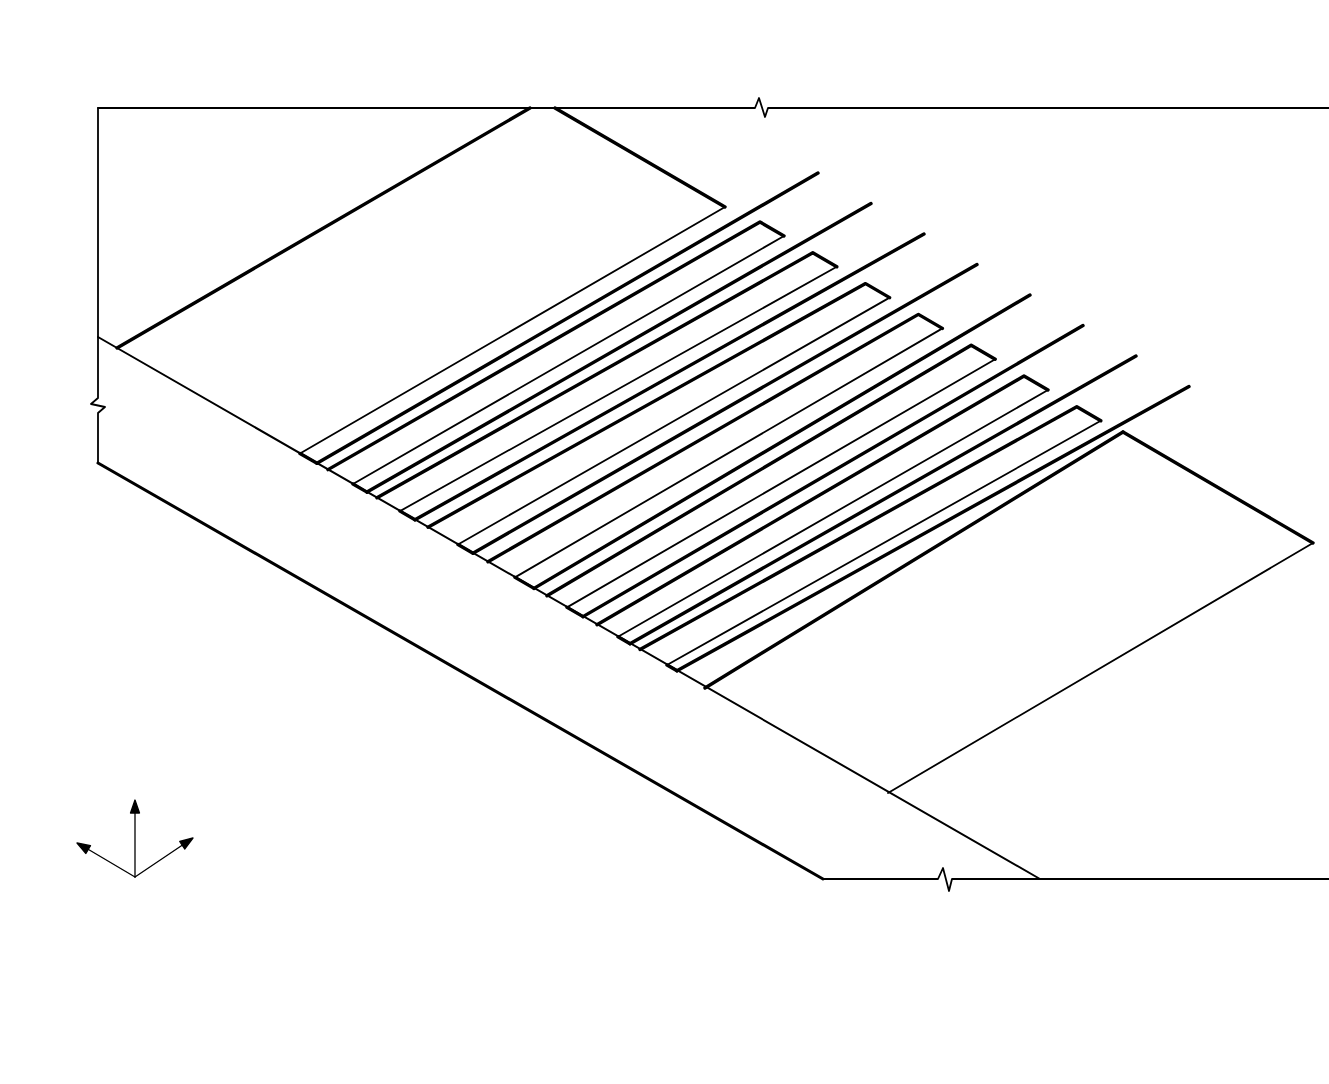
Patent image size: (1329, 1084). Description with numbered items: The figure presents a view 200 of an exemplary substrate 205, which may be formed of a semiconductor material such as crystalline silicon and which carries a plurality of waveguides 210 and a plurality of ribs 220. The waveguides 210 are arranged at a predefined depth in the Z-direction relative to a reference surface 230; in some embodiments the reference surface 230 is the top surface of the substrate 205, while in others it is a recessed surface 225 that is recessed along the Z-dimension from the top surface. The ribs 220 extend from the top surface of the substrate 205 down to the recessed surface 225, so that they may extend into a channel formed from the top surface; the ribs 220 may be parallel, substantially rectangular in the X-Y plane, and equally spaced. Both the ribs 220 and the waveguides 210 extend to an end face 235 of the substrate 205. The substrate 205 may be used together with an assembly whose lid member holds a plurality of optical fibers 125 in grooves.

The view 200 is at (205, 86).
The substrate 205 is at (670, 827).
The end face 235 is at (200, 489).
The optical fiber 125 is at (385, 125).
The recessed surface 225 is at (1075, 645).
The reference surface 230 is at (1183, 569).
The plurality of waveguides 210 is at (813, 160).
The plurality of ribs 220 is at (458, 552).